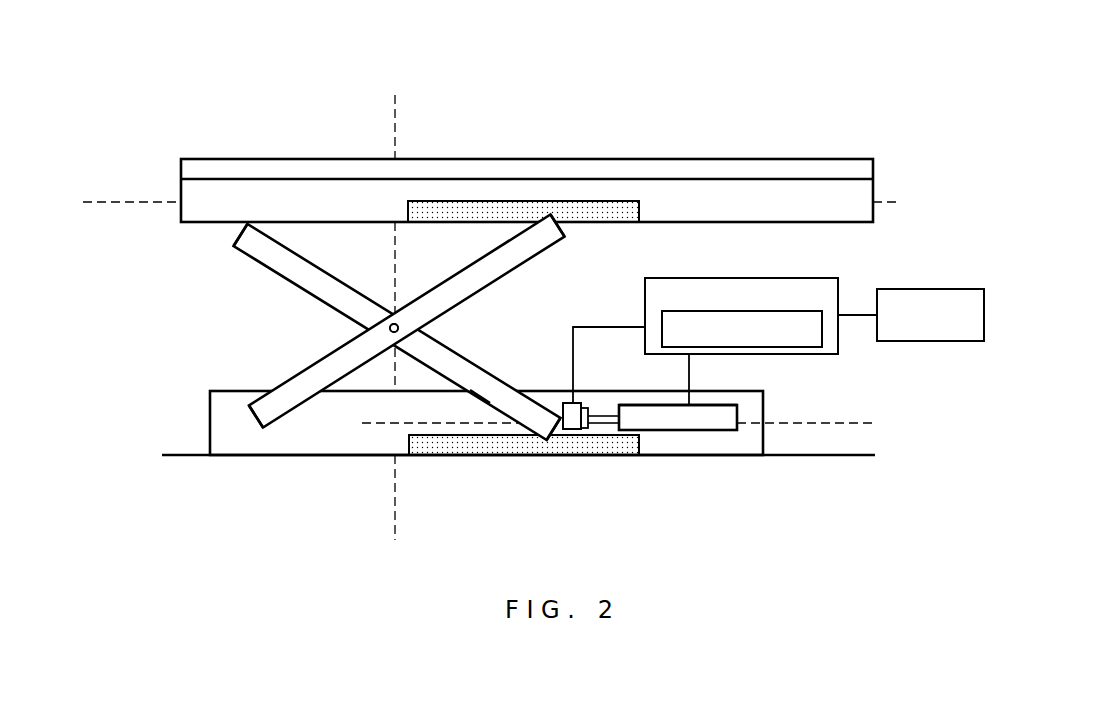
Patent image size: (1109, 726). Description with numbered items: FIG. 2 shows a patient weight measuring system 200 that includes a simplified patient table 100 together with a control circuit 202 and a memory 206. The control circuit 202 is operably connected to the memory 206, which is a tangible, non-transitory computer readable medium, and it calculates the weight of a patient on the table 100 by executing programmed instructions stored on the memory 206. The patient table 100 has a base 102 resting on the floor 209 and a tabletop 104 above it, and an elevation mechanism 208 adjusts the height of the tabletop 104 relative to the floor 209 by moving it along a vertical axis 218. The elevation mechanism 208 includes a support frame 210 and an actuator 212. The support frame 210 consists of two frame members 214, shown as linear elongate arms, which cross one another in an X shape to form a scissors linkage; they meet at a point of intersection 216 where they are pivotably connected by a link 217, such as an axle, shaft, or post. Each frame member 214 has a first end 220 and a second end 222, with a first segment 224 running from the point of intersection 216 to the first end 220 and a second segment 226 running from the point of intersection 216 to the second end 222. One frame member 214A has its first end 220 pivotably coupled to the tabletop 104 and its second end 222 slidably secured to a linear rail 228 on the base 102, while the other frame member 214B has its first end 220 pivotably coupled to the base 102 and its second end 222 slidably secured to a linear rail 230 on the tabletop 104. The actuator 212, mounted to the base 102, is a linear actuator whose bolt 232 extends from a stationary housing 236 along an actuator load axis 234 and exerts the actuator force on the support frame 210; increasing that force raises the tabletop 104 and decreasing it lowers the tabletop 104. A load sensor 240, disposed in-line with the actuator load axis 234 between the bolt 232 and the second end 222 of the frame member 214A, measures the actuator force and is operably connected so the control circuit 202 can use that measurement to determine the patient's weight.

The patient table 100 is at (482, 298).
The base 102 is at (210, 420).
The tabletop 104 is at (181, 202).
The patient weight measuring system 200 is at (526, 275).
The control circuit 202 is at (839, 293).
The memory storage device 206 is at (965, 342).
The elevation mechanism 208 is at (480, 407).
The floor 209 is at (857, 457).
The support frame 210 is at (383, 318).
The actuator 212 is at (680, 453).
The frame members 214 is at (401, 318).
The frame member 214A is at (363, 365).
The frame member 214B is at (390, 356).
The point of intersection 216 is at (403, 324).
The link 217 is at (386, 327).
The vertical axis 218 is at (396, 118).
The first end 220 is at (246, 229).
The second end 222 is at (555, 442).
The first segment 224 is at (291, 406).
The second segment 226 is at (507, 265).
The linear rail 228 is at (417, 450).
The linear rail 230 is at (430, 212).
The bolt 232 is at (603, 414).
The actuator load axis 234 is at (850, 422).
The housing 236 is at (721, 427).
The load sensor 240 is at (569, 402).